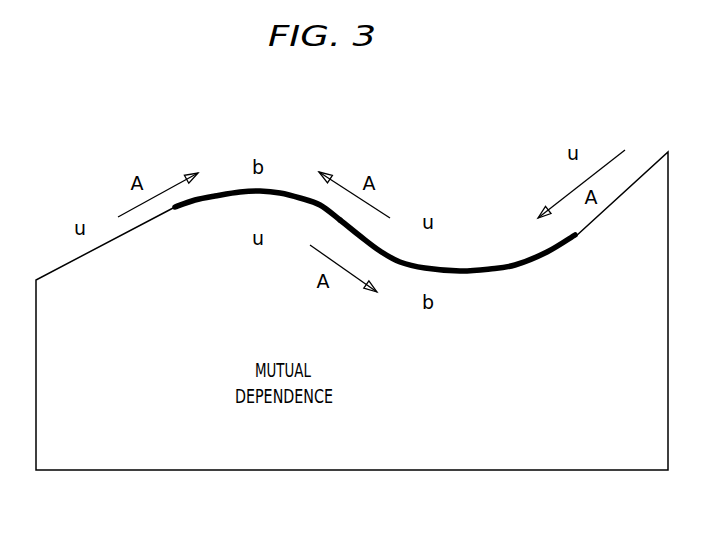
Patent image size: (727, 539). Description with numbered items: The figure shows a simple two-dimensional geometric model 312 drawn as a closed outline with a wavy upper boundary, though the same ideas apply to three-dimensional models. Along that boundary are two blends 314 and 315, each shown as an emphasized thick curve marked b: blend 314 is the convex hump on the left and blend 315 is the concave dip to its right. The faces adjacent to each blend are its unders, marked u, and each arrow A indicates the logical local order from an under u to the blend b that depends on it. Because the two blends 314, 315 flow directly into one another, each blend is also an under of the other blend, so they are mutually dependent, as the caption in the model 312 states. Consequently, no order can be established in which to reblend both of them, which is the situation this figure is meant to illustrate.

The geometric model 312 is at (572, 424).
The blend 314 is at (285, 180).
The blend 315 is at (505, 289).